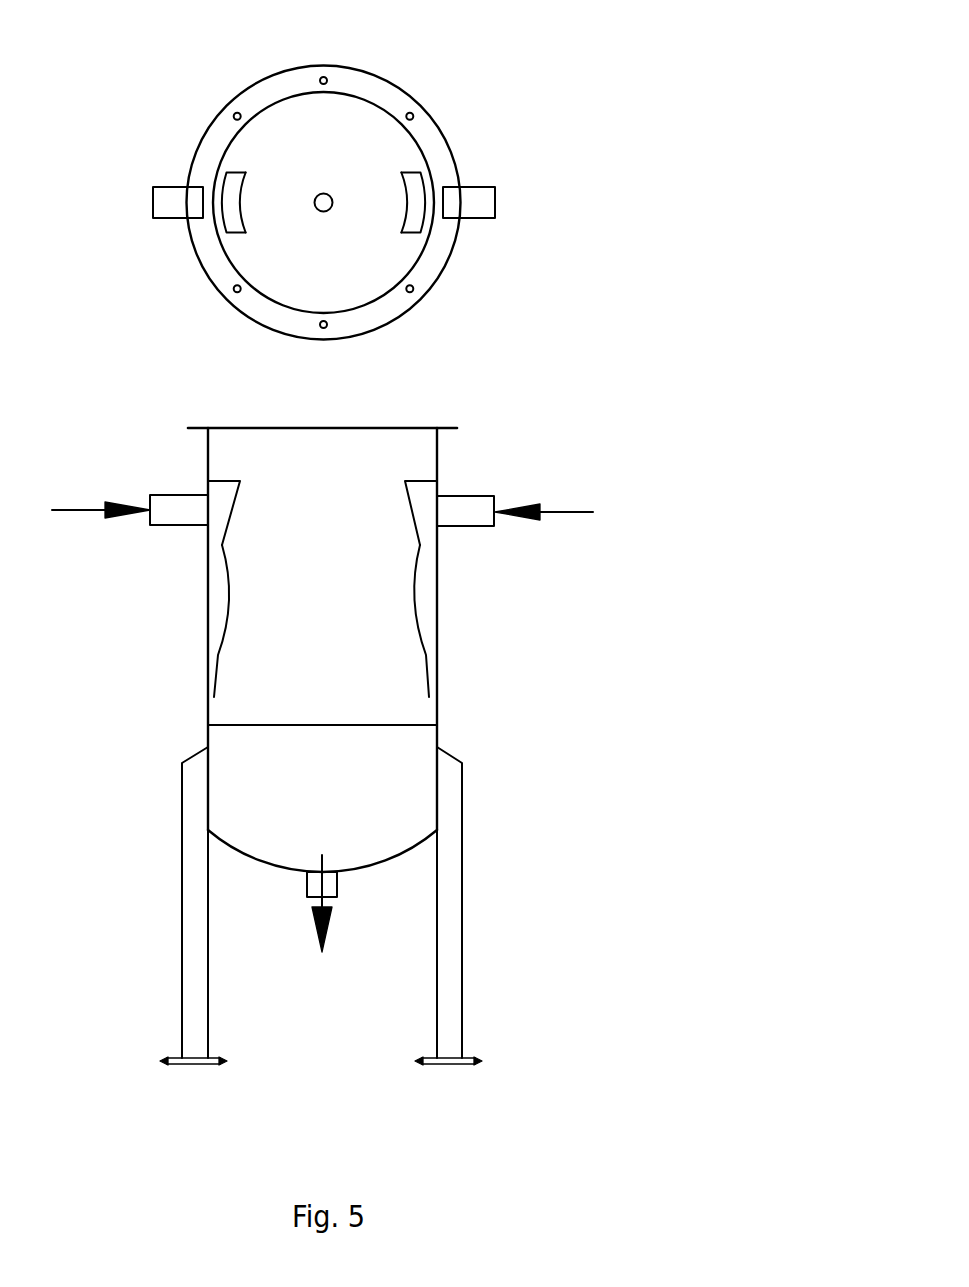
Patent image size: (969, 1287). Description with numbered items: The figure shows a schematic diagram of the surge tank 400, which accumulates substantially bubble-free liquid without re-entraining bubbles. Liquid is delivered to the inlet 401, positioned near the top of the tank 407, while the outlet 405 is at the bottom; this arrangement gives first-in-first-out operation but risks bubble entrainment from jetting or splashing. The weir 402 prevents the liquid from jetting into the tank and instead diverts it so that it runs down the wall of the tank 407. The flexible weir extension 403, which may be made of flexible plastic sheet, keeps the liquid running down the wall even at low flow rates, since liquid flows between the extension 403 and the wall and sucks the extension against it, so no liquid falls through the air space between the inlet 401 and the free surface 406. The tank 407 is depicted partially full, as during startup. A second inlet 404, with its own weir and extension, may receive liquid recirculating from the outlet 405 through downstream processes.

The surge tank 400 is at (658, 903).
The inlet 401 is at (495, 202).
The weir 402 is at (420, 165).
The flexible weir extension 403 is at (424, 204).
The inlet 404 is at (153, 195).
The outlet 405 is at (438, 280).
The free surface 406 is at (323, 723).
The tank 407 is at (437, 475).